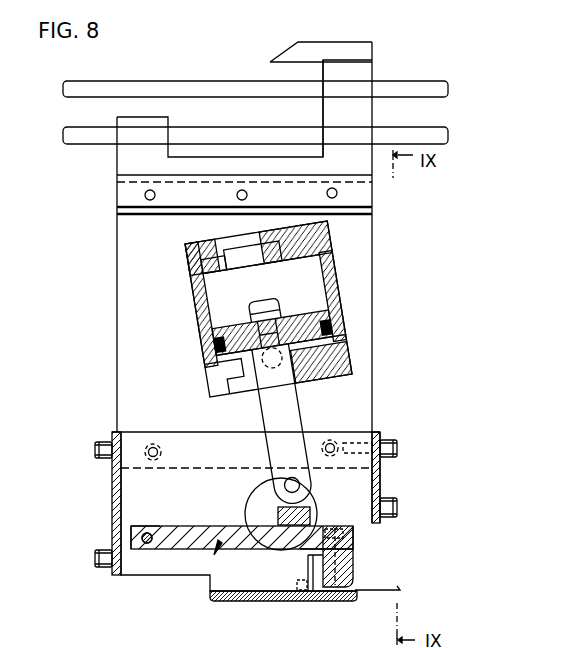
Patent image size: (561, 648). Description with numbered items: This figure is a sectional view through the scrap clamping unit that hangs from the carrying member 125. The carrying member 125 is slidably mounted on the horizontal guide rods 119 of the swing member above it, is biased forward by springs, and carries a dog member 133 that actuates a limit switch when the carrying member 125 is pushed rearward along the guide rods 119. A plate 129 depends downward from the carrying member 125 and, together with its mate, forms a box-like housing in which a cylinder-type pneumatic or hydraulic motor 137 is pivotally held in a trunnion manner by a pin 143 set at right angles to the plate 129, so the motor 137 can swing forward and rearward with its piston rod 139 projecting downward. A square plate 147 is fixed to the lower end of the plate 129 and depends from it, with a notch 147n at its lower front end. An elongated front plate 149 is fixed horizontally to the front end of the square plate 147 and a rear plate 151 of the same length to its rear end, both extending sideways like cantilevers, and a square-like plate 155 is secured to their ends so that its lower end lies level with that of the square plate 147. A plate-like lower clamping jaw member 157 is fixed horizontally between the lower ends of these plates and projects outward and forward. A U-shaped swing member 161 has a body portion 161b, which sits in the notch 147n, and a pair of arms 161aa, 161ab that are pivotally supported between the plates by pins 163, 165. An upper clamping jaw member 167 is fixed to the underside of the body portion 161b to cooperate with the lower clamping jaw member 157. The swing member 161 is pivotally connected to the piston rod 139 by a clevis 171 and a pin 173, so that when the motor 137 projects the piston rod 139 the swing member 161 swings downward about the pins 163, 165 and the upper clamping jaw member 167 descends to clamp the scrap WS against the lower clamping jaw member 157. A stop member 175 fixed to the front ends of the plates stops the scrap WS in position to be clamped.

The guide rods 119 is at (447, 92).
The carrying member 125 is at (368, 194).
The plate 129 is at (367, 248).
The dog member 133 is at (373, 50).
The pneumatic or hydraulic motor 137 is at (345, 327).
The piston rod 139 is at (300, 405).
The pin 143 is at (270, 365).
The square plate 147 is at (170, 505).
The notch 147n is at (254, 489).
The front plate 149 is at (380, 470).
The rear plate 151 is at (120, 492).
The plate 155 is at (363, 490).
The lower clamping jaw member 157 is at (333, 598).
The swing member 161 is at (213, 557).
The arm 161aa is at (160, 550).
The arm 161ab is at (141, 583).
The body portion 161b is at (300, 545).
The pin 163 is at (143, 537).
The pin 165 is at (98, 546).
The upper clamping jaw member 167 is at (352, 567).
The clevis 171 is at (313, 518).
The pin 173 is at (287, 492).
The stop member 175 is at (310, 597).
The scrap WS is at (398, 594).